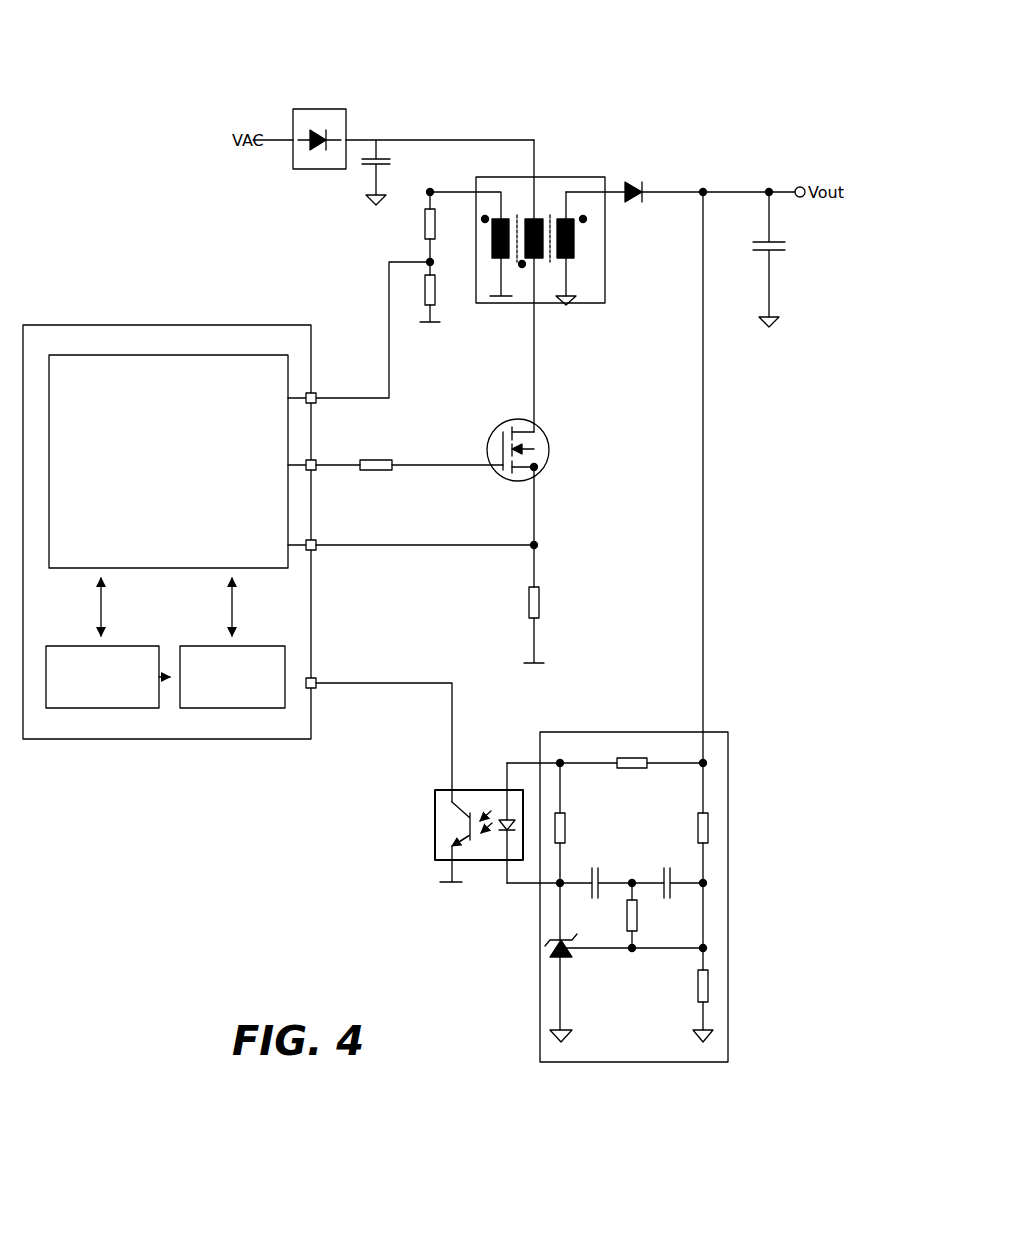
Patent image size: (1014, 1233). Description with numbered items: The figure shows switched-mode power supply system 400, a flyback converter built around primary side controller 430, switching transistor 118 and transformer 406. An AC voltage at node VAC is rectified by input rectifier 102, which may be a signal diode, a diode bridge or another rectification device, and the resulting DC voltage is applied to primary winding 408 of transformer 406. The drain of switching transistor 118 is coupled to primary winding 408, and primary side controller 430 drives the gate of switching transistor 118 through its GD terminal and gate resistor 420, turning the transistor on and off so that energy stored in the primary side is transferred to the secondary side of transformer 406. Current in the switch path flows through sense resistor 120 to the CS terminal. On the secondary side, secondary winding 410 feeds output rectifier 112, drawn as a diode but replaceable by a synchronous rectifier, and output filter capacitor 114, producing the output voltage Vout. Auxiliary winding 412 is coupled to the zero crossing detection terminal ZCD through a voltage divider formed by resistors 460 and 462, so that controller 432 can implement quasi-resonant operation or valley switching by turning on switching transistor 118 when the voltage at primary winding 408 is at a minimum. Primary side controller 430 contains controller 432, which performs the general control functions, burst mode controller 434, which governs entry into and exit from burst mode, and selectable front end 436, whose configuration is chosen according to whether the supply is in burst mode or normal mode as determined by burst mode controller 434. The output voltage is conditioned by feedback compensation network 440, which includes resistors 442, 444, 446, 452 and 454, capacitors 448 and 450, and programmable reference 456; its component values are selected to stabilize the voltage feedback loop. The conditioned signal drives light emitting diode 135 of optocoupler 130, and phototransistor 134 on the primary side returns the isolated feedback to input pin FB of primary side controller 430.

The switched-mode power supply system 400 is at (127, 42).
The input rectifier 102 is at (334, 109).
The transformer 406 is at (566, 177).
The primary winding 408 is at (538, 218).
The secondary winding 410 is at (575, 253).
The auxiliary winding 412 is at (492, 233).
The output rectifier 112 is at (640, 186).
The output filter capacitor 114 is at (786, 246).
The resistor 460 is at (424, 232).
The resistor 462 is at (440, 300).
The primary side controller 430 is at (164, 325).
The controller 432 is at (248, 555).
The burst mode controller 434 is at (111, 647).
The selectable front end 436 is at (241, 647).
The gate resistor 420 is at (375, 460).
The switching transistor 118 is at (543, 432).
The current sense resistor 120 is at (541, 597).
The optocoupler 130 is at (494, 790).
The phototransistor 134 is at (462, 833).
The light emitting diode 135 is at (497, 837).
The feedback compensation network 440 is at (585, 735).
The resistor 442 is at (635, 762).
The resistor 444 is at (566, 830).
The resistor 446 is at (697, 830).
The capacitor 448 is at (598, 875).
The capacitor 450 is at (664, 876).
The resistor 452 is at (637, 914).
The resistor 454 is at (698, 992).
The programmable reference 456 is at (568, 958).